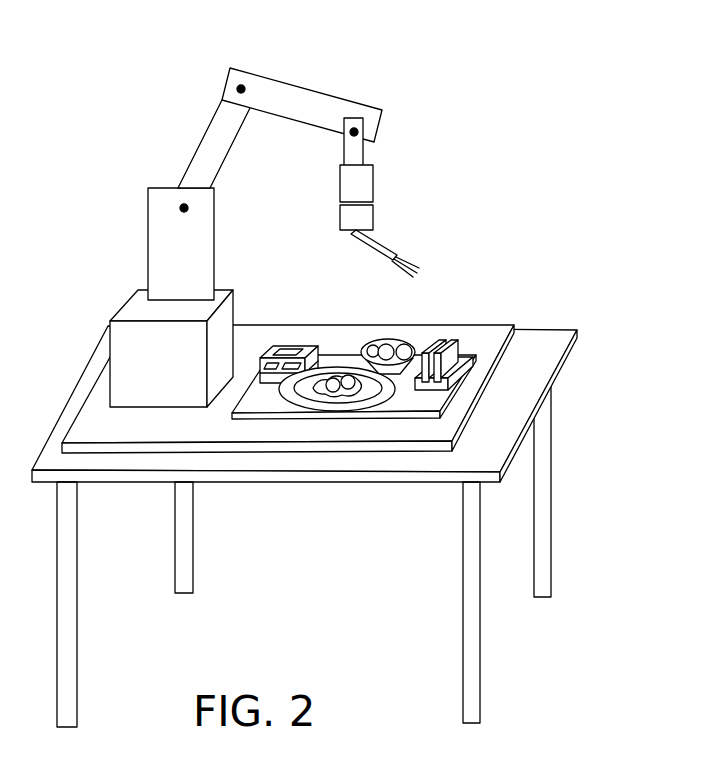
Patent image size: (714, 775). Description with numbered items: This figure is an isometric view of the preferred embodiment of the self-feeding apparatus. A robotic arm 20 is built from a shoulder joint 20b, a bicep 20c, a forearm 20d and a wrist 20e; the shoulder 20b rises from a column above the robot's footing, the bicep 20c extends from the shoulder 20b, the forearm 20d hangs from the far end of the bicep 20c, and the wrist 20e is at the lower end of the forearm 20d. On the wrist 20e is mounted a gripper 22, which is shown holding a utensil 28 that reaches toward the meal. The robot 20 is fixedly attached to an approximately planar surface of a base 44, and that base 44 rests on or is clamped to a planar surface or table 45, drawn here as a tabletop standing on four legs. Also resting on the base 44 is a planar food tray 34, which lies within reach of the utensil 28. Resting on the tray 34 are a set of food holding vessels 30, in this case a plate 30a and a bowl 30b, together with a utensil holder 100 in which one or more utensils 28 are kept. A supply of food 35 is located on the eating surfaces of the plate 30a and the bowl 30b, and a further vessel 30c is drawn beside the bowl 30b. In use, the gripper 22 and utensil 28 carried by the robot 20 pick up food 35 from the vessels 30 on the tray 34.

The robotic arm 20 is at (292, 204).
The shoulder joint 20b is at (171, 297).
The bicep 20c is at (260, 82).
The forearm 20d is at (342, 97).
The wrist 20e is at (372, 175).
The gripper 22 is at (368, 213).
The utensil 28 is at (395, 250).
The utensil holder 100 is at (272, 350).
The food 35 is at (430, 342).
The food holding vessels 30 is at (447, 429).
The plate 30a is at (328, 403).
The bowl 30b is at (400, 366).
The rack 30c is at (475, 354).
The food tray 34 is at (258, 408).
The base 44 is at (250, 433).
The table 45 is at (67, 417).